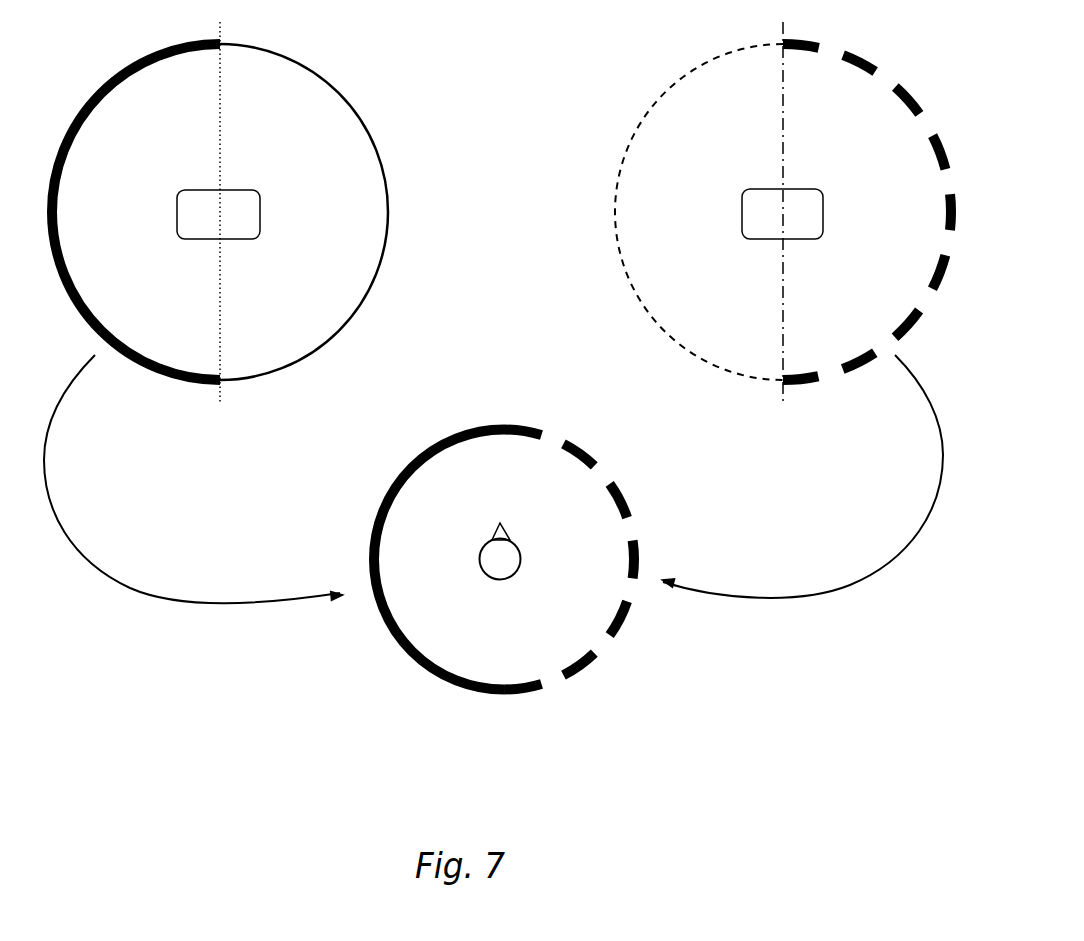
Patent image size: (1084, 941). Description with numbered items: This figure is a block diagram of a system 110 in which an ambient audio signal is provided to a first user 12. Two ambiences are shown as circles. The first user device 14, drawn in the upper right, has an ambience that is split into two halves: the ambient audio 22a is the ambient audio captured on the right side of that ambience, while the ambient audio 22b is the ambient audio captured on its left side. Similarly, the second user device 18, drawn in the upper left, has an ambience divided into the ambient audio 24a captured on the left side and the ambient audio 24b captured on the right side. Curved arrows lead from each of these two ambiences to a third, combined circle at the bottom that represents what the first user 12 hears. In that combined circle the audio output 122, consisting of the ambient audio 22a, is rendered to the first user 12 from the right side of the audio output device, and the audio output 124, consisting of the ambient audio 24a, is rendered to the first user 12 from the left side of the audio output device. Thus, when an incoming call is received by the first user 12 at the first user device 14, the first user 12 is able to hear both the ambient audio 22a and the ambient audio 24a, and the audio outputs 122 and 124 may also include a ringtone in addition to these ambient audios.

The first user 12 is at (503, 567).
The first user device 14 is at (805, 230).
The second user device 18 is at (232, 230).
The ambient audio 22a is at (837, 345).
The ambient audio 22b is at (633, 252).
The ambient audio 24a is at (148, 338).
The ambient audio 24b is at (363, 268).
The system 110 is at (812, 718).
The audio output 122 is at (580, 625).
The audio output 124 is at (422, 632).